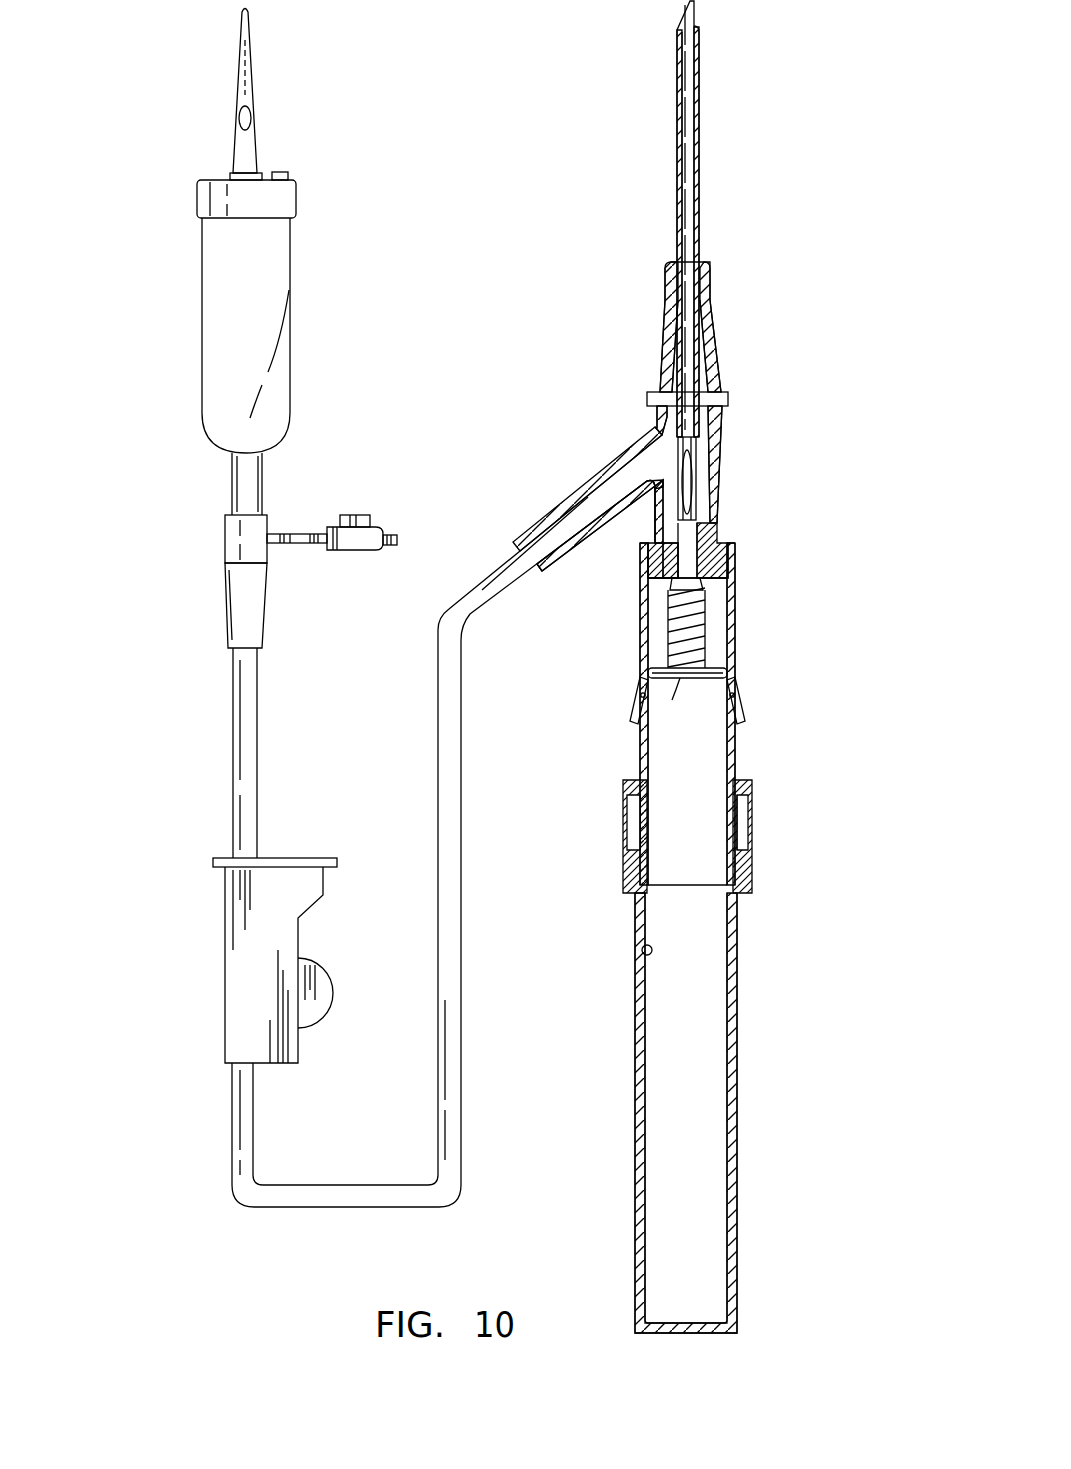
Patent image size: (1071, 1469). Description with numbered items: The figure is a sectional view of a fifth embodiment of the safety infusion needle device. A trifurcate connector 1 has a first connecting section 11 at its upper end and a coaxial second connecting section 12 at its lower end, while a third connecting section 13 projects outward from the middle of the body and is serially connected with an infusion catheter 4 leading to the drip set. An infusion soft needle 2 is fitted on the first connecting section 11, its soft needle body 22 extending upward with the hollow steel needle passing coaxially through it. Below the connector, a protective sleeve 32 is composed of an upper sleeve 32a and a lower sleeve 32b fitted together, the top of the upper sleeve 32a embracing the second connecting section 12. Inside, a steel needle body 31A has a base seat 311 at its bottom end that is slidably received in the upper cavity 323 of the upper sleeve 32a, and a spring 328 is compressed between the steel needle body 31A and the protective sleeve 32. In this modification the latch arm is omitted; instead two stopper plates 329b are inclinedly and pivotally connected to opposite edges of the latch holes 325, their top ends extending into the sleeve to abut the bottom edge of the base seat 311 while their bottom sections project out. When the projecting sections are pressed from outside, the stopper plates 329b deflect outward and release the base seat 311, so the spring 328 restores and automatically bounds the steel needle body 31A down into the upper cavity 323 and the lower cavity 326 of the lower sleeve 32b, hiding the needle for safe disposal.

The trifurcate connector 1 is at (577, 497).
The infusion soft needle 2 is at (677, 230).
The infusion catheter 4 is at (497, 562).
The first connecting section 11 is at (705, 347).
The second connecting section 12 is at (718, 510).
The third connecting section 13 is at (545, 516).
The soft needle body 22 is at (677, 153).
The steel needle body 31A is at (700, 453).
The protective sleeve 32 is at (704, 938).
The upper sleeve 32a is at (740, 752).
The lower sleeve 32b is at (742, 932).
The base seat 311 is at (680, 680).
The upper cavity 323 is at (640, 797).
The latch hole 325 is at (638, 676).
The lower cavity 326 is at (643, 953).
The spring 328 is at (676, 610).
The stopper plate 329b is at (634, 705).